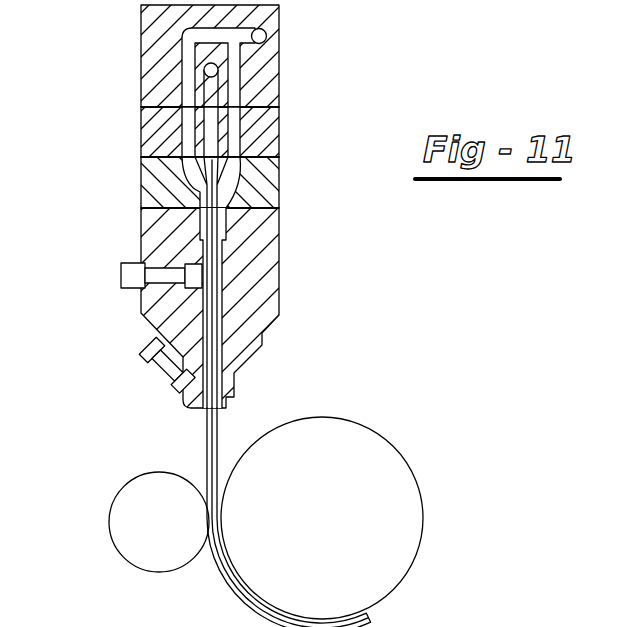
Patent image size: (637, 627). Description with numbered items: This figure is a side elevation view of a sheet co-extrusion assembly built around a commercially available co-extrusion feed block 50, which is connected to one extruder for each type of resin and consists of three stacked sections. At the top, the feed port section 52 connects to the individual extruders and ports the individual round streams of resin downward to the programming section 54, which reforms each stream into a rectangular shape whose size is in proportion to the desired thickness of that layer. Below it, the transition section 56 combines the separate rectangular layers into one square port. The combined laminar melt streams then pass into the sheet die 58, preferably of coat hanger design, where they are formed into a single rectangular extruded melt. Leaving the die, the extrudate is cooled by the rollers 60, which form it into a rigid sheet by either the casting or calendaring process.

The co-extrusion feed block 50 is at (131, 206).
The feed port section 52 is at (279, 55).
The programming section 54 is at (279, 120).
The transition section 56 is at (280, 187).
The sheet die 58 is at (279, 265).
The rollers 60 is at (382, 480).